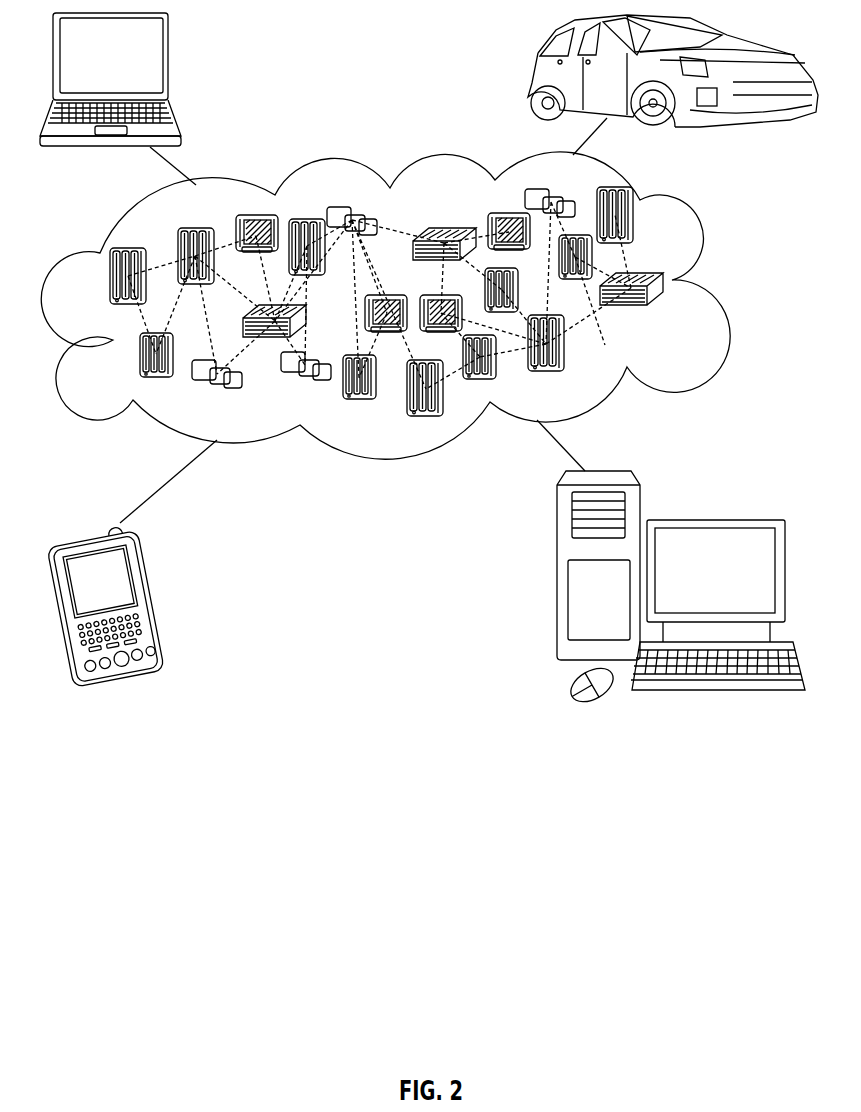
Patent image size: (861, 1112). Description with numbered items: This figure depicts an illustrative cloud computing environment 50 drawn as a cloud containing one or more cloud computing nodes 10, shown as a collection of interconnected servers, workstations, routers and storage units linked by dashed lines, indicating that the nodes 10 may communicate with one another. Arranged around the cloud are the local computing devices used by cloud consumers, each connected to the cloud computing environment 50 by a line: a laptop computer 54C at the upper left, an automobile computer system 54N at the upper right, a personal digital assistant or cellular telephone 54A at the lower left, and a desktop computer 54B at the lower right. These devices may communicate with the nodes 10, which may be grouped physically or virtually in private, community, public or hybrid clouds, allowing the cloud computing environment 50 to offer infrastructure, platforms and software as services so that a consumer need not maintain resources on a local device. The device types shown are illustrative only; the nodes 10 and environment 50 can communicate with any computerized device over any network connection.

The cloud computing node 10 is at (668, 309).
The cloud computing environment 50 is at (716, 283).
The personal digital assistant or cellular telephone 54A is at (163, 594).
The desktop computer 54B is at (713, 520).
The laptop computer 54C is at (168, 62).
The automobile computer system 54N is at (530, 72).